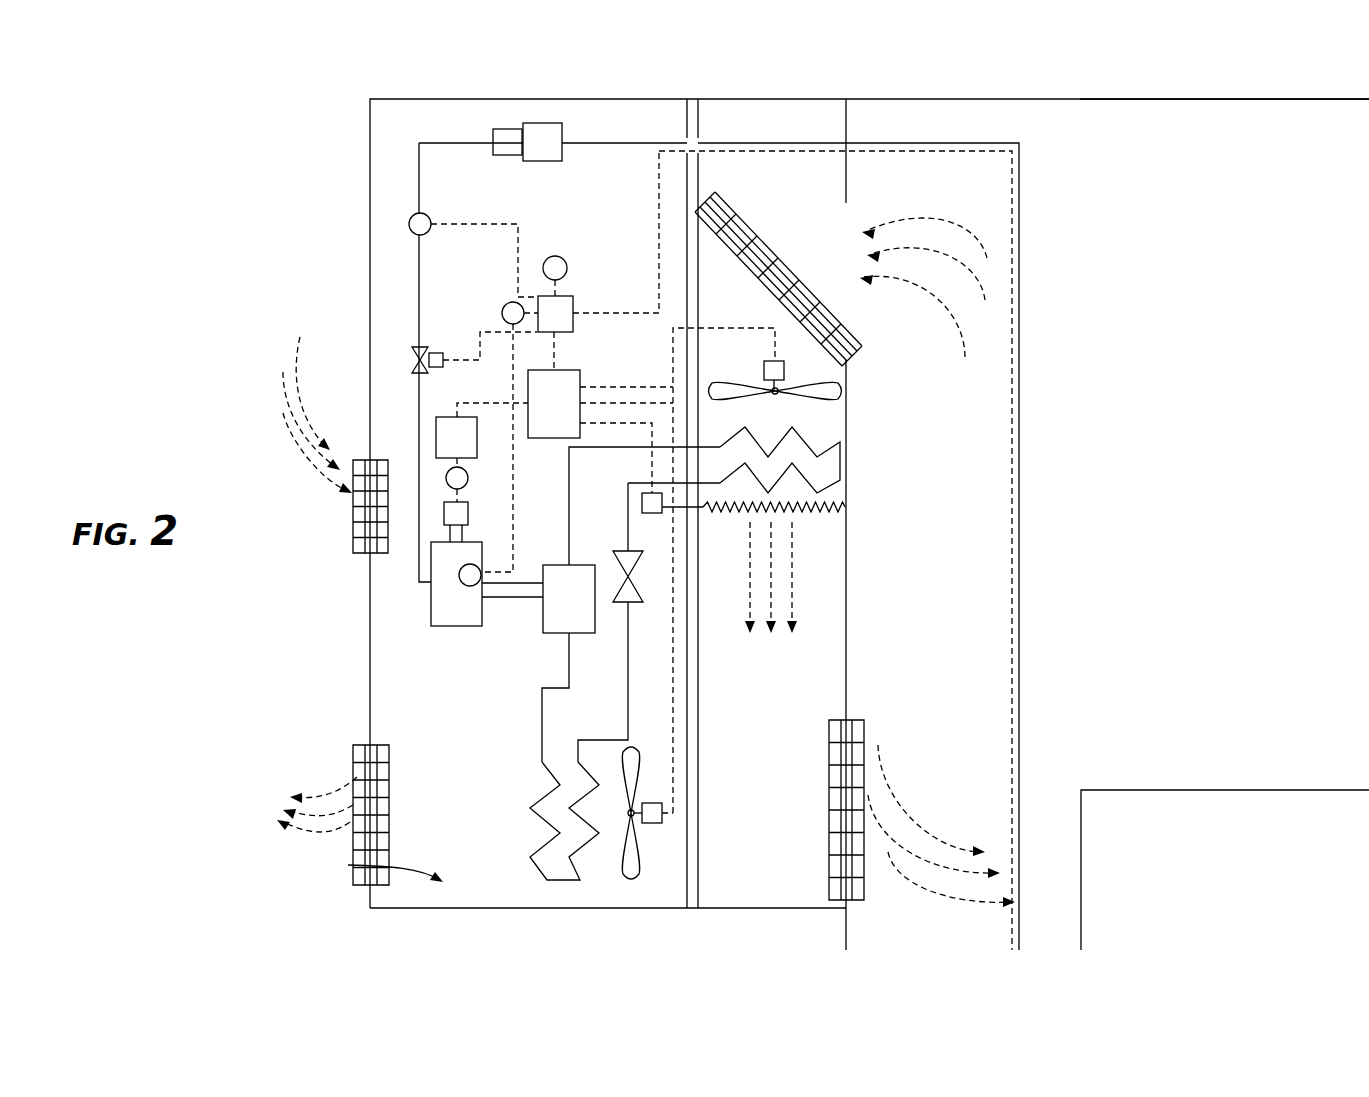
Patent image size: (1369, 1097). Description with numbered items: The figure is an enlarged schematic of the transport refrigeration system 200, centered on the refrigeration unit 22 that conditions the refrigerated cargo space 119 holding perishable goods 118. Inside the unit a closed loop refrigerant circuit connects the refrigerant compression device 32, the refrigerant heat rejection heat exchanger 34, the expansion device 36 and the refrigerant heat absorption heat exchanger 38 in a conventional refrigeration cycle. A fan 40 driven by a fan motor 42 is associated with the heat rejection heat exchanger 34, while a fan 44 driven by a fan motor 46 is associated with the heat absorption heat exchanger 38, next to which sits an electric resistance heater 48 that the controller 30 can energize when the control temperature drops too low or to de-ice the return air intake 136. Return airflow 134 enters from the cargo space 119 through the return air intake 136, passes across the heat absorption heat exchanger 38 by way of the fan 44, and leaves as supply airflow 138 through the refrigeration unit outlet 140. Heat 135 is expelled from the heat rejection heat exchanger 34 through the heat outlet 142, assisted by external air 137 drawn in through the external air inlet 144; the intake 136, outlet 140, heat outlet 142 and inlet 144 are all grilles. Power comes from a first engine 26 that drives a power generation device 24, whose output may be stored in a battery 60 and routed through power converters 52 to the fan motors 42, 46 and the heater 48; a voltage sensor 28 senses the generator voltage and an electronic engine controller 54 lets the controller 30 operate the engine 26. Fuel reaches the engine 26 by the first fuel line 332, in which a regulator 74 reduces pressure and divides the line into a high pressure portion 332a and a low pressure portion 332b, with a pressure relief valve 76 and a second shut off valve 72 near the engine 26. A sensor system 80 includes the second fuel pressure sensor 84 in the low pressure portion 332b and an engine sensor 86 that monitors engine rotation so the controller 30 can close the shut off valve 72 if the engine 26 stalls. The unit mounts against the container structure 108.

The refrigeration unit 22 is at (480, 99).
The power generation device 24 is at (444, 502).
The first engine 26 is at (431, 620).
The voltage sensor 28 is at (468, 483).
The controller 30 is at (573, 332).
The refrigerant compression device 32 is at (543, 612).
The refrigerant heat rejection heat exchanger 34 is at (568, 881).
The expansion device 36 is at (641, 590).
The refrigerant heat absorption heat exchanger 38 is at (842, 447).
The fan 40 is at (636, 872).
The fan motor 42 is at (663, 813).
The fan 44 is at (837, 393).
The fan motor 46 is at (764, 373).
The heater 48 is at (845, 507).
The power converter 52 is at (552, 438).
The electronic engine controller 54 is at (507, 303).
The battery 60 is at (436, 433).
The second shut off valve 72 is at (411, 351).
The regulator 74 is at (543, 162).
The pressure relief valve 76 is at (507, 156).
The sensor system 80 is at (313, 215).
The second fuel pressure sensor 84 is at (409, 224).
The engine sensor 86 is at (471, 586).
The container roof 108 is at (1147, 99).
The perishable goods 118 is at (1154, 790).
The refrigerated cargo space 119 is at (1267, 340).
The return airflow 134 is at (963, 338).
The heat 135 is at (293, 832).
The return air intake 136 is at (770, 257).
The external air 137 is at (290, 407).
The supply airflow 138 is at (893, 795).
The refrigeration unit outlet 140 is at (829, 733).
The heat outlet 142 is at (353, 758).
The external air inlet 144 is at (353, 548).
The transport refrigeration system 200 is at (330, 158).
The first fuel line 332 is at (1019, 545).
The high pressure portion 332a is at (1012, 600).
The low pressure portion 332b is at (419, 166).